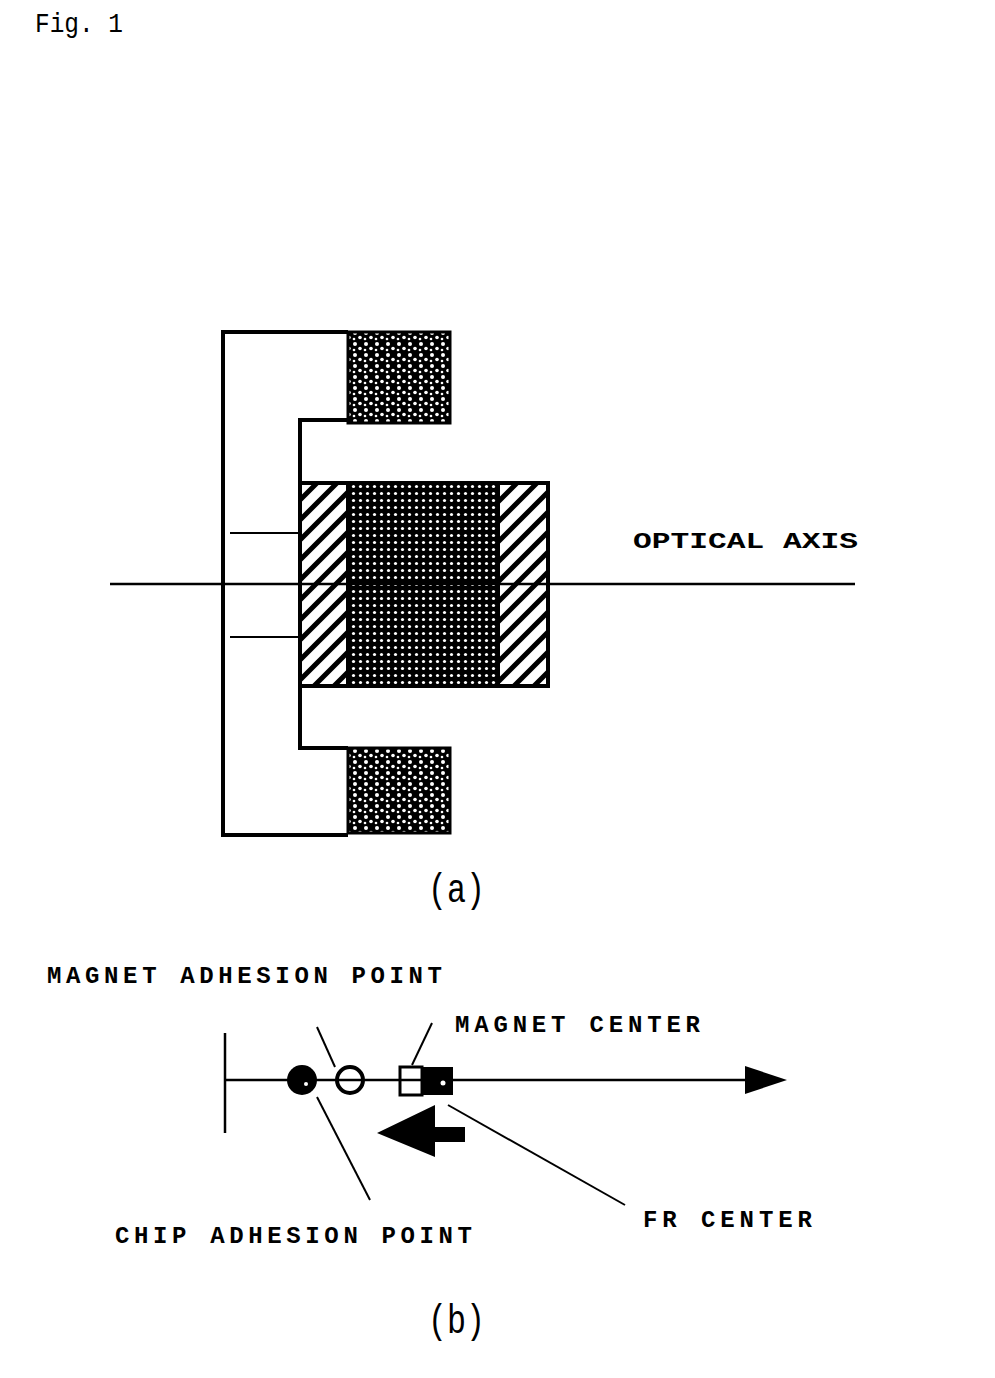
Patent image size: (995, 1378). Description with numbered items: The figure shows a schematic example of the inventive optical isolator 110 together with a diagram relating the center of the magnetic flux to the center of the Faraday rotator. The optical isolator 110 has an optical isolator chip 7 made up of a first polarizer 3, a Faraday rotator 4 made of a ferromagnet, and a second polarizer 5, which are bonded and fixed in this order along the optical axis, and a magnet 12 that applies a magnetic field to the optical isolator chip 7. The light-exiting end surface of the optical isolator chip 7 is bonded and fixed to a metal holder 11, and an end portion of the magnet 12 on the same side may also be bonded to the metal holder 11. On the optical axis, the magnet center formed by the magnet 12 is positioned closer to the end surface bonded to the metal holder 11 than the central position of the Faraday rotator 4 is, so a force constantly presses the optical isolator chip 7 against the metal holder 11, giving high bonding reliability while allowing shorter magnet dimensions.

The optical isolator 110 is at (310, 187).
The metal holder 11 is at (252, 332).
The first polarizer 3 is at (313, 483).
The Faraday rotator 4 is at (402, 483).
The second polarizer 5 is at (525, 483).
The optical isolator chip 7 is at (588, 664).
The magnet 12 is at (453, 782).